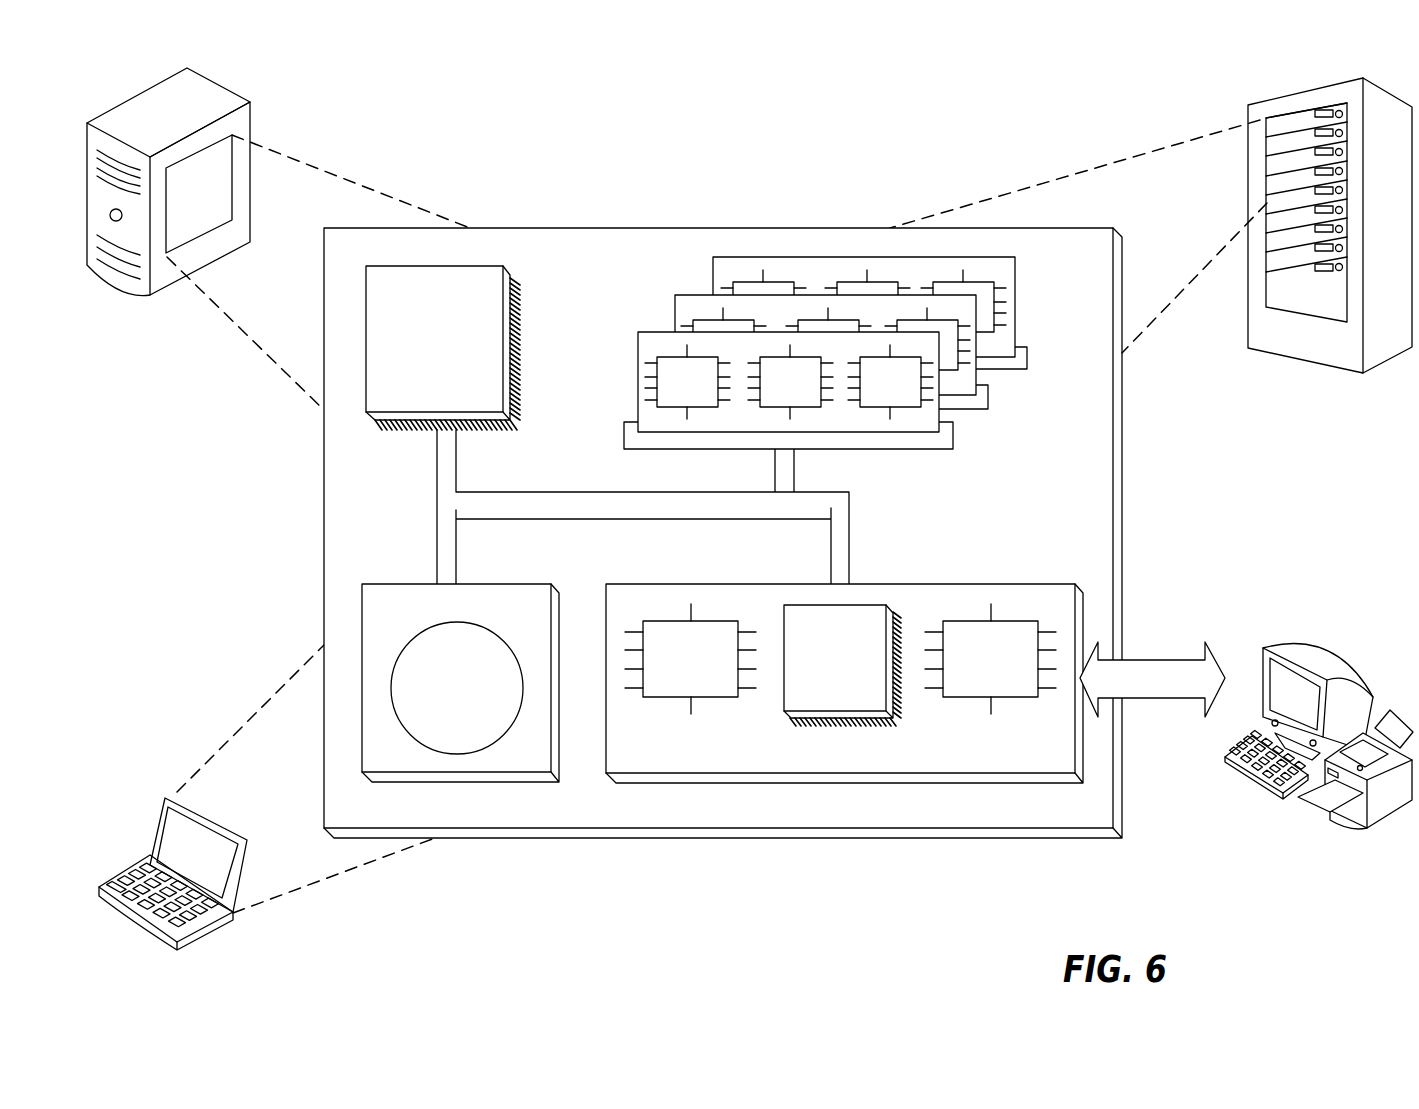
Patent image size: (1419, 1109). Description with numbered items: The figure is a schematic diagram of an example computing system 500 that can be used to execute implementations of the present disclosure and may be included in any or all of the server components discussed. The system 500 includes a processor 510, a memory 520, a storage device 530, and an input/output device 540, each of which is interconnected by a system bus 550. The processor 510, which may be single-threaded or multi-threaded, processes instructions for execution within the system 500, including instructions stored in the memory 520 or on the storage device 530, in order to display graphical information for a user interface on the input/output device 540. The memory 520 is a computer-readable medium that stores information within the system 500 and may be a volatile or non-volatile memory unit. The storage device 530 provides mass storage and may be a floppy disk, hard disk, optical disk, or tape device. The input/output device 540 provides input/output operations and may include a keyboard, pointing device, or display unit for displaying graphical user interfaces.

The computing system 500 is at (535, 142).
The processor 510 is at (494, 402).
The memory 520 is at (1022, 410).
The storage device 530 is at (540, 764).
The input/output device 540 is at (1257, 648).
The system bus 550 is at (638, 510).